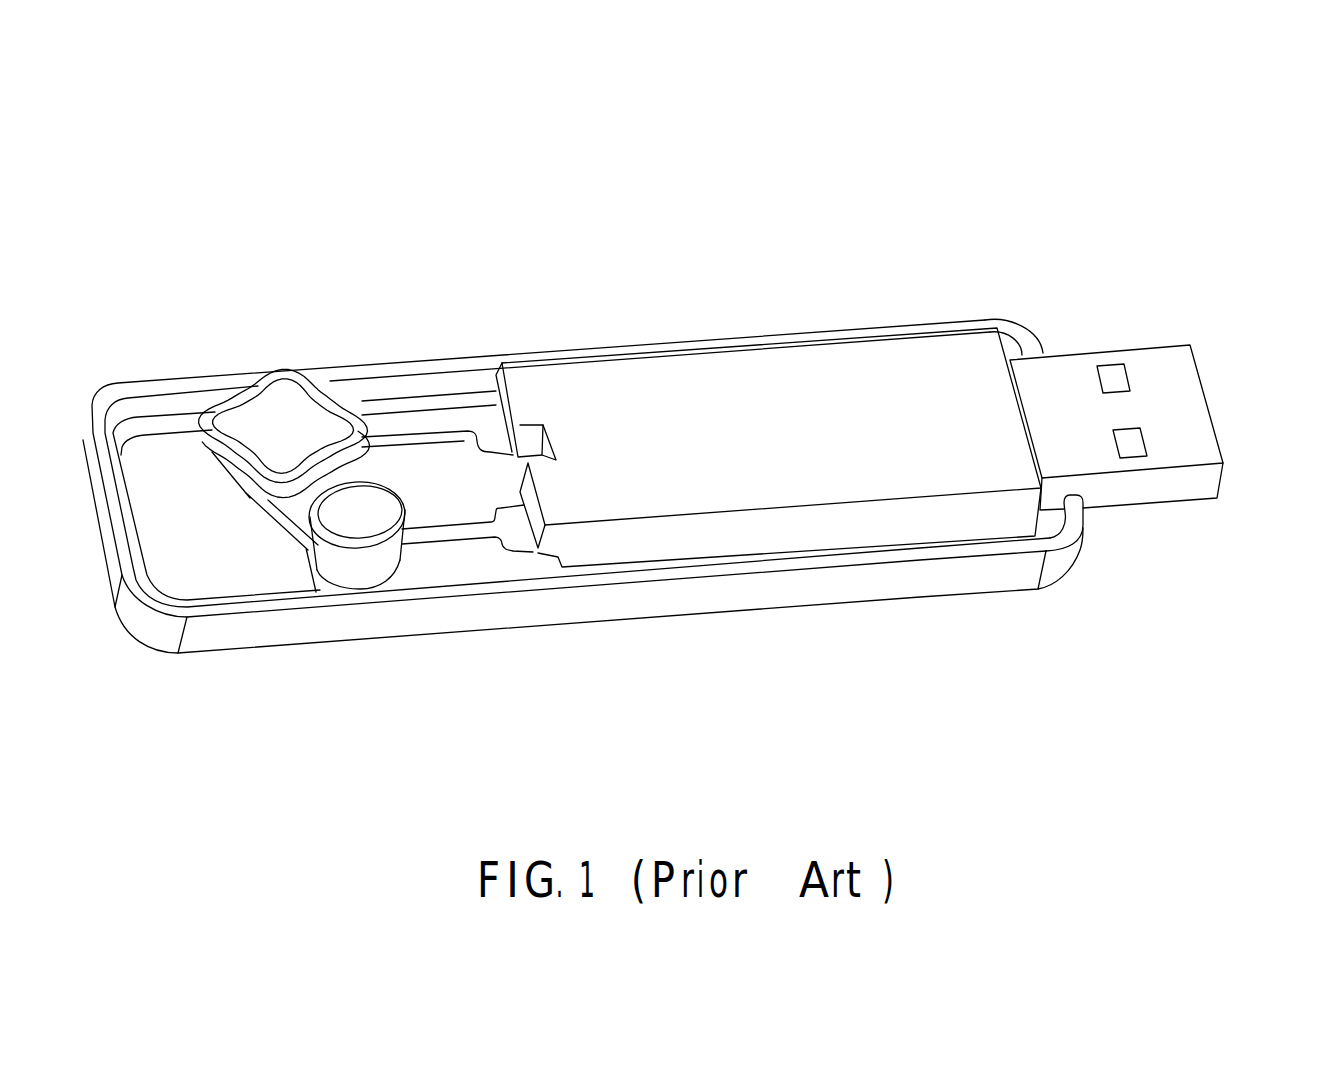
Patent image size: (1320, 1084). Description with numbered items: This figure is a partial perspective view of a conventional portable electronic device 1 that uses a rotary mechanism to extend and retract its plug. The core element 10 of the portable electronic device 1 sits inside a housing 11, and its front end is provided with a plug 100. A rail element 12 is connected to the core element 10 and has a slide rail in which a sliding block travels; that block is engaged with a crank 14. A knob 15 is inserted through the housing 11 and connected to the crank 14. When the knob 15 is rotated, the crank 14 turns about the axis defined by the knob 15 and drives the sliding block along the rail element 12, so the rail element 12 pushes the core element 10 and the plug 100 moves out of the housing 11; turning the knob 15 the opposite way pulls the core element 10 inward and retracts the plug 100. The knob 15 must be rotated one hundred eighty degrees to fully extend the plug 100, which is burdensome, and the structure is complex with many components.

The portable electronic device 1 is at (989, 168).
The core element 10 is at (872, 347).
The housing 11 is at (147, 386).
The rail element 12 is at (438, 428).
The crank 14 is at (363, 558).
The knob 15 is at (288, 416).
The plug 100 is at (1186, 398).